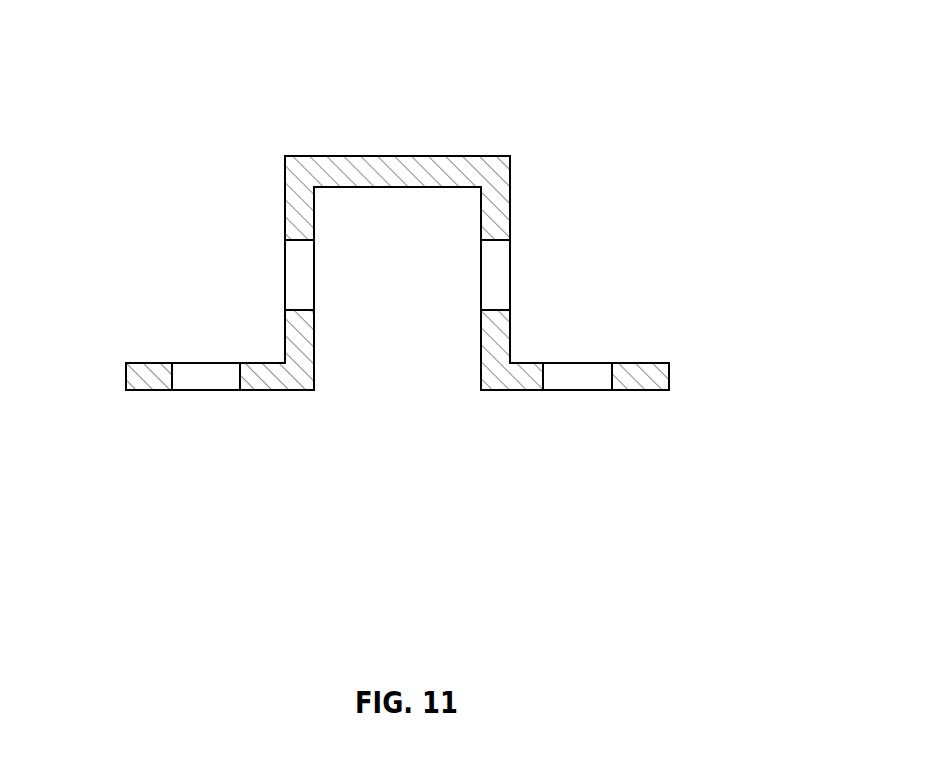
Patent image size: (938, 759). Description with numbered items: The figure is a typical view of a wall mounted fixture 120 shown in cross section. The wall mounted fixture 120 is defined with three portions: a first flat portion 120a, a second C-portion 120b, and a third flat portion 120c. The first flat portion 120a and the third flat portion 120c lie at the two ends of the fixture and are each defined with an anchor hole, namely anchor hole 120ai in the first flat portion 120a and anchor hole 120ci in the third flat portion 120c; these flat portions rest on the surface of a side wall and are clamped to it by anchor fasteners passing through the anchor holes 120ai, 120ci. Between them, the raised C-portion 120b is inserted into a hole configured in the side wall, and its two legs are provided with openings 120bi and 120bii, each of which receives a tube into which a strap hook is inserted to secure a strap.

The wall mounted fixture 120 is at (640, 97).
The first flat portion 120a is at (153, 377).
The anchor hole 120ai is at (198, 385).
The second C-portion 120b is at (398, 172).
The opening 120bi is at (300, 255).
The opening 120bii is at (483, 263).
The third flat portion 120c is at (642, 377).
The anchor hole 120ci is at (585, 380).